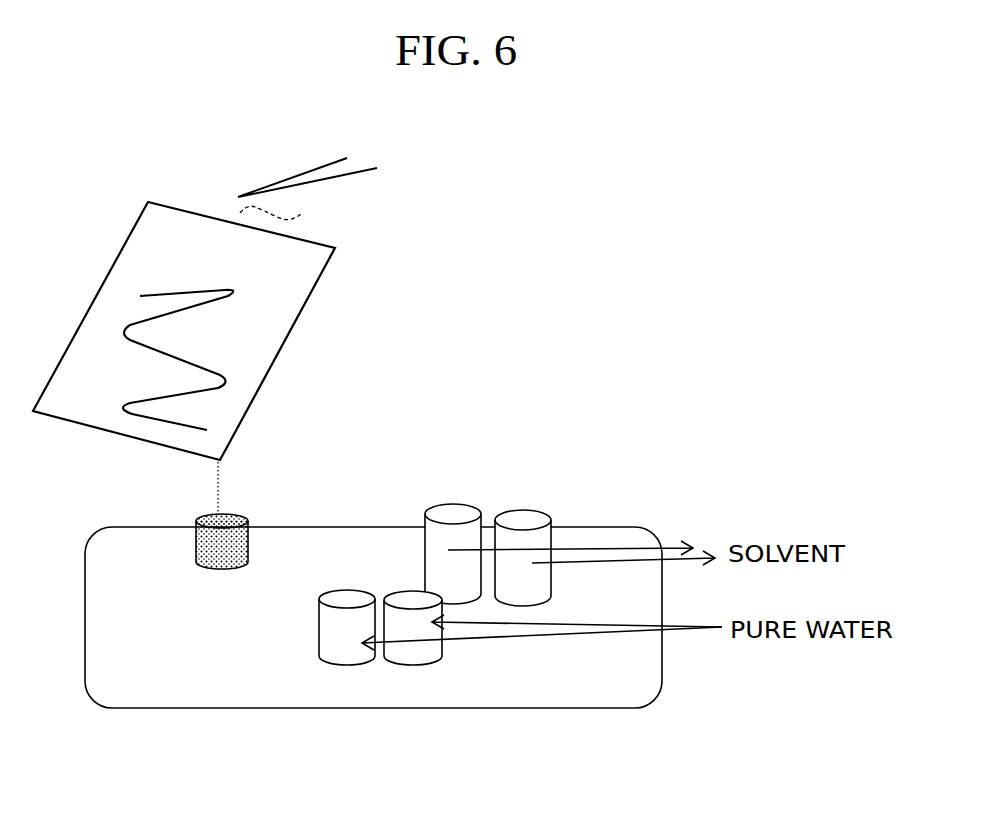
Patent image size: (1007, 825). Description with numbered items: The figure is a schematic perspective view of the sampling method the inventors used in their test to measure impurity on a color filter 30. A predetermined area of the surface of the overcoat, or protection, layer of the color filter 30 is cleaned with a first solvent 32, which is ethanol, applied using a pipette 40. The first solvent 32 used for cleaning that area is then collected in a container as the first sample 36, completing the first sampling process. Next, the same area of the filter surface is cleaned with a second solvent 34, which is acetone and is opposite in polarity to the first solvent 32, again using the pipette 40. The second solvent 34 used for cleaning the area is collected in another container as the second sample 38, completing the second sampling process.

The color filter 30 is at (125, 245).
The first solvent 32 is at (455, 517).
The second solvent 34 is at (527, 517).
The first sample 36 is at (259, 508).
The second sample 38 is at (227, 538).
The pipette 40 is at (320, 171).